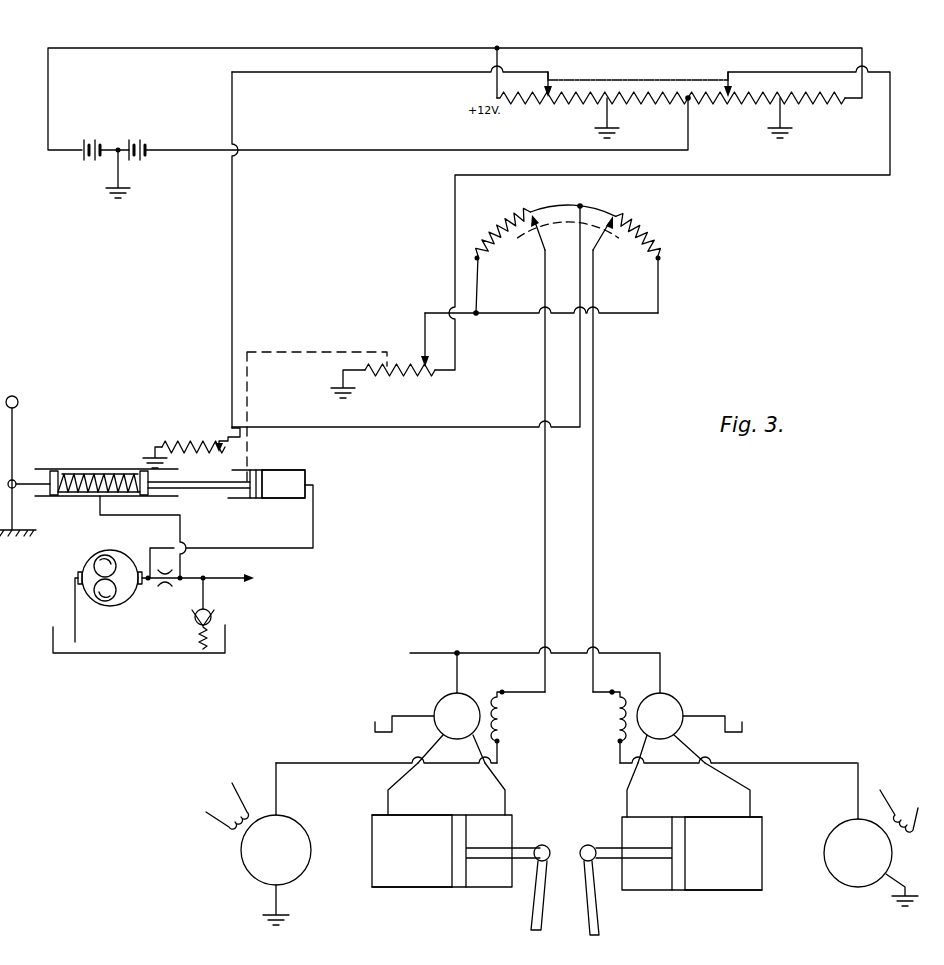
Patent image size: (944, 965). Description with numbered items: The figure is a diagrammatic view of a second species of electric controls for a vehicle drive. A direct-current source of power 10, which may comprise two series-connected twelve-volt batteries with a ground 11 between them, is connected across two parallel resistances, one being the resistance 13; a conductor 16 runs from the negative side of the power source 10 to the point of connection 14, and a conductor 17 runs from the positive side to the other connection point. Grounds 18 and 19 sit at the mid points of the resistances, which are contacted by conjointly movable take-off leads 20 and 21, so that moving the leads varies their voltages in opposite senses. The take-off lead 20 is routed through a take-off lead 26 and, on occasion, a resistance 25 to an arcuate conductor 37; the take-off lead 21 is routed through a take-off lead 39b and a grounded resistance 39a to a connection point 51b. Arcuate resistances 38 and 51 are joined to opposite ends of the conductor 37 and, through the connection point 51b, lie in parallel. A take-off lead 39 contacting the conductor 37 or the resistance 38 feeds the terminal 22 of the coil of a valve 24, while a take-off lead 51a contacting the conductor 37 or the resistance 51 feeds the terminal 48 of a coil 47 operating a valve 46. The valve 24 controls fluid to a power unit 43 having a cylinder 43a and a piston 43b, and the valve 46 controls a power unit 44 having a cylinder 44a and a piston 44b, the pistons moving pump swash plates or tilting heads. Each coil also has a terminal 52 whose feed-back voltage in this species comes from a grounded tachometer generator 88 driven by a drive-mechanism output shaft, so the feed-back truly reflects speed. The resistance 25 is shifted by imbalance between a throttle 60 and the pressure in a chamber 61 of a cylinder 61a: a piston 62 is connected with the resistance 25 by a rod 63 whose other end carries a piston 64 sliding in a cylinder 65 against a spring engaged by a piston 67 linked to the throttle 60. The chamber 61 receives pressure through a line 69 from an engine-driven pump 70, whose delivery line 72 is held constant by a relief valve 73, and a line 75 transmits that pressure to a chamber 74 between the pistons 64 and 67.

The direct-current source of power 10 is at (84, 172).
The ground 11 is at (122, 189).
The resistance 13 is at (738, 104).
The point of connection 14 is at (688, 95).
The conductor 16 is at (190, 148).
The conductor 17 is at (153, 47).
The ground 18 is at (600, 130).
The ground 19 is at (784, 126).
The take-off lead 20 is at (552, 74).
The take-off lead 21 is at (728, 70).
The terminal of the coil 22 is at (503, 691).
The valve 24 is at (438, 706).
The resistance 25 is at (186, 445).
The take-off lead 26 is at (213, 440).
The arcuate conductor 37 is at (567, 207).
The arcuate resistance 38 is at (504, 228).
The take-off lead 39 is at (542, 252).
The grounded resistance 39a is at (405, 376).
The take-off lead 39b is at (423, 331).
The power unit 43 is at (432, 790).
The cylinder 43a is at (397, 888).
The piston 43b is at (458, 888).
The power unit 44 is at (656, 790).
The cylinder 44a is at (712, 817).
The piston 44b is at (682, 862).
The valve 46 is at (683, 703).
The coil 47 is at (626, 701).
The terminal 48 is at (612, 694).
The arcuate resistance 51 is at (650, 246).
The take-off lead 51a is at (596, 254).
The connection point 51b is at (477, 316).
The terminal 52 is at (500, 743).
The throttle 60 is at (17, 404).
The chamber 61 is at (283, 499).
The cylinder 61a is at (300, 470).
The piston 62 is at (255, 499).
The rod 63 is at (218, 490).
The piston 64 is at (142, 470).
The cylinder 65 is at (102, 470).
The piston 67 is at (52, 470).
The line 69 is at (318, 518).
The engine-driven pump 70 is at (78, 573).
The delivery line 72 is at (257, 581).
The relief valve 73 is at (212, 611).
The chamber 74 is at (90, 471).
The line 75 is at (107, 517).
The tachometer generator 88 is at (242, 864).